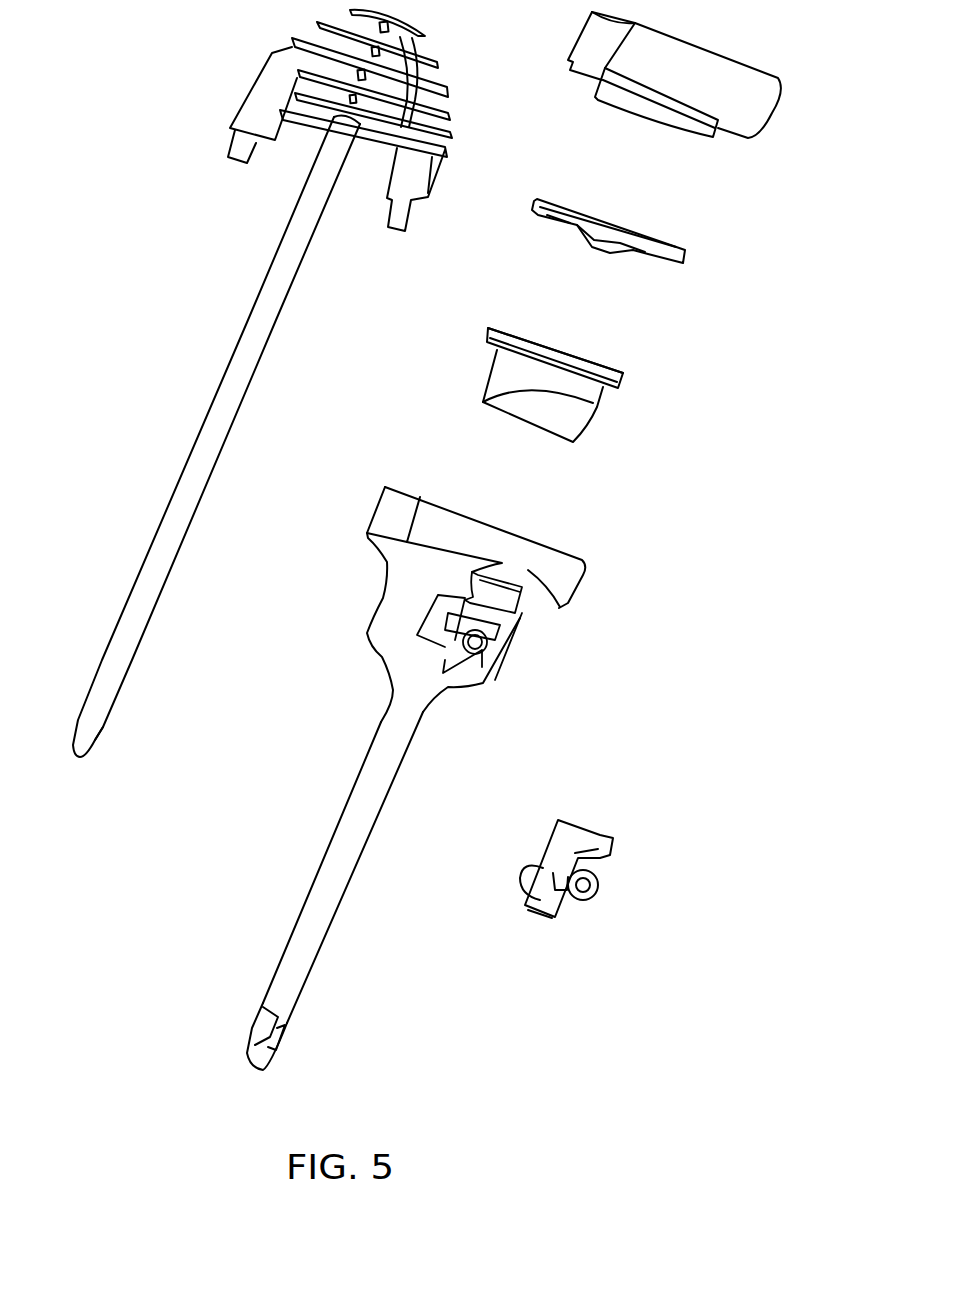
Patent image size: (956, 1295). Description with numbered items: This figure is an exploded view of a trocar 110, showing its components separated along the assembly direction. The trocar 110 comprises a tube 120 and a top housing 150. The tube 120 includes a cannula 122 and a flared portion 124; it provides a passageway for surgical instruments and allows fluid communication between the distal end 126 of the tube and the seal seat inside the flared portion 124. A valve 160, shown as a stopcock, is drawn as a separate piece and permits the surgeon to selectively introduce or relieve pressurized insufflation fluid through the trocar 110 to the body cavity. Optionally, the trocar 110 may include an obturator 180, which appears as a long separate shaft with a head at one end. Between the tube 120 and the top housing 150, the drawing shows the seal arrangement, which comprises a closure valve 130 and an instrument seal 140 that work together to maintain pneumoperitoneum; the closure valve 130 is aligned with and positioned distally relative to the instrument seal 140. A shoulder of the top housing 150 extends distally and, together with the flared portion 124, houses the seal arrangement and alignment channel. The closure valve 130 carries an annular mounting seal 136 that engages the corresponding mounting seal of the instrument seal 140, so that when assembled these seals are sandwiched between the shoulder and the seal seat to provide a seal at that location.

The trocar 110 is at (697, 640).
The tube 120 is at (425, 722).
The cannula 122 is at (358, 855).
The flared portion 124 is at (503, 647).
The distal end 126 is at (250, 1062).
The closure valve 130 is at (592, 408).
The annular mounting seal 136 is at (486, 334).
The instrument seal 140 is at (686, 256).
The top housing 150 is at (765, 128).
The valve 160 is at (550, 920).
The obturator 180 is at (232, 363).